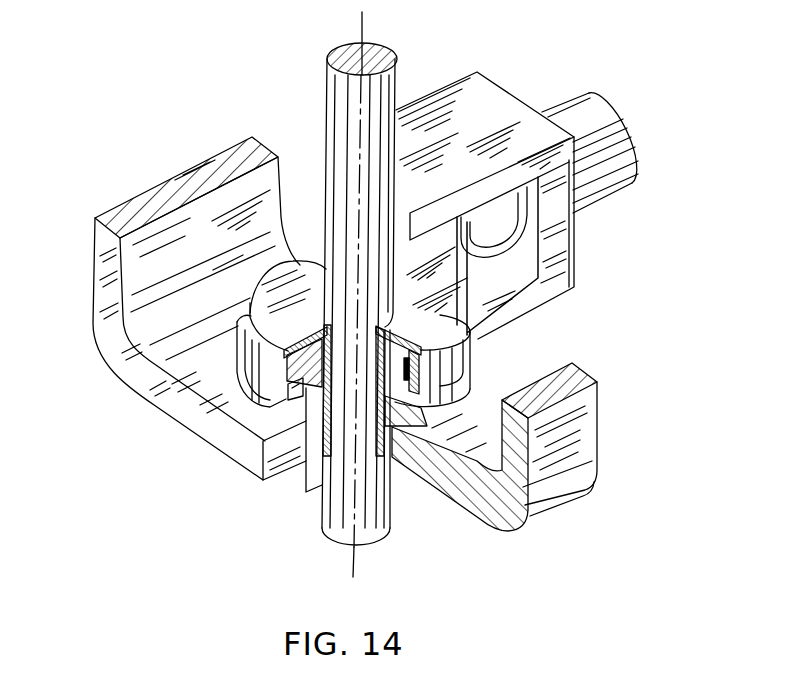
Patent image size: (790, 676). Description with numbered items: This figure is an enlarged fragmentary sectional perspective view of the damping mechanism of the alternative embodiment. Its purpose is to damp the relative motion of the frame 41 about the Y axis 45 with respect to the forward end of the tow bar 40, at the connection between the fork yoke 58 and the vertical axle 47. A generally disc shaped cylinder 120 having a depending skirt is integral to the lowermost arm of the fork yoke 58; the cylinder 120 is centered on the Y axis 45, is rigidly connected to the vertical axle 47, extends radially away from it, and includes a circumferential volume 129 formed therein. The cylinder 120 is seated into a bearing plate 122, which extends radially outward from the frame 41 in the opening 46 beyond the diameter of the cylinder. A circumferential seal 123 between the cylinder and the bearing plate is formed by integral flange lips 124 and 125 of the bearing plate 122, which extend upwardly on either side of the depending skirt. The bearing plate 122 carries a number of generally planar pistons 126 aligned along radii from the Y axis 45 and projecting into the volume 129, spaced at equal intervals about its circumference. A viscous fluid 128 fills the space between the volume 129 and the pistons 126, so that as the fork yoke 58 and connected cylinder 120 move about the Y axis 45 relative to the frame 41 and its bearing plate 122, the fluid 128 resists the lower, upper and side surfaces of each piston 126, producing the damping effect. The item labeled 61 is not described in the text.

The Y axis 45 is at (362, 22).
The vertical axle 47 is at (347, 97).
The frame 41 is at (103, 245).
The tow bar 40 is at (597, 198).
The fork yoke 58 is at (553, 212).
The spring 61 is at (528, 238).
The circumferential volume 129 is at (314, 338).
The cylinder 120 is at (263, 352).
The flange lip 124 is at (285, 376).
The circumferential seal 123 is at (310, 372).
The viscous fluid 128 is at (310, 387).
The pistons 126 is at (397, 368).
The bearing plate 122 is at (412, 415).
The flange lip 125 is at (427, 407).
The opening 46 is at (473, 400).